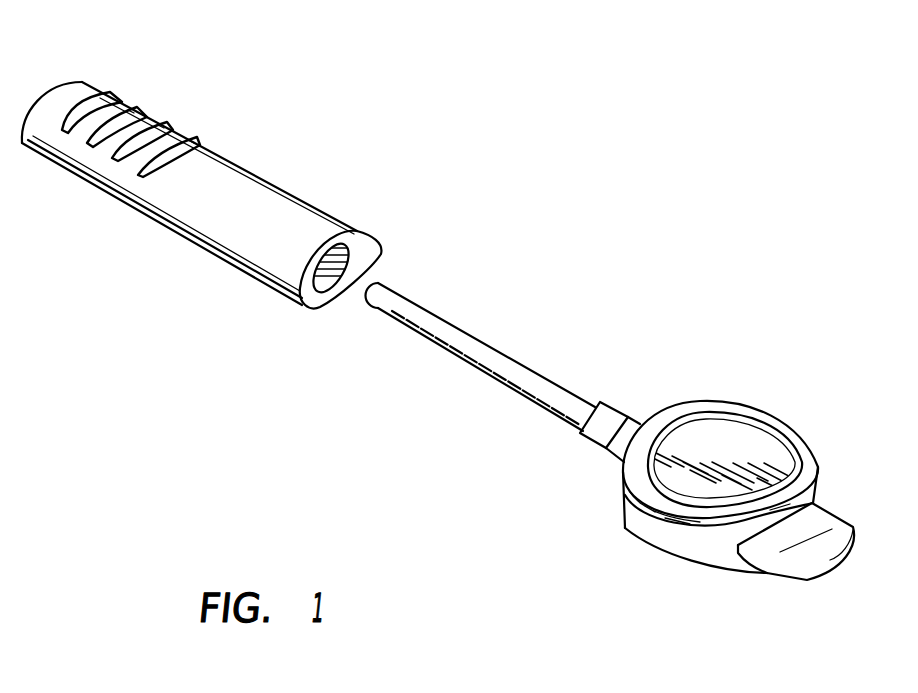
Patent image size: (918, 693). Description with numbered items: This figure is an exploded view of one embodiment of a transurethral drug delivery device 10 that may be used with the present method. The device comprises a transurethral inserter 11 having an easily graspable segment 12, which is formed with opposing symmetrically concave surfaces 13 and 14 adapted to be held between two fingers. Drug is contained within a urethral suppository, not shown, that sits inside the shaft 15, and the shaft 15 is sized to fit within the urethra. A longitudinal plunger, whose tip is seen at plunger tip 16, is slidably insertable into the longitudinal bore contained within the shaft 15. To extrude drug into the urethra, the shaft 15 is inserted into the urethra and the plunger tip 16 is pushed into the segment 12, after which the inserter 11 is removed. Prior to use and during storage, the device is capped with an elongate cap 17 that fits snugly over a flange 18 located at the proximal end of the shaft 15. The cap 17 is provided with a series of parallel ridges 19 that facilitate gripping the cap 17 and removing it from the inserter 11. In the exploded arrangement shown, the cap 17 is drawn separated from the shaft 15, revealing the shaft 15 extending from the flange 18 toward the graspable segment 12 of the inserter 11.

The transurethral drug delivery device 10 is at (391, 109).
The transurethral inserter 11 is at (654, 353).
The easily graspable segment 12 is at (803, 472).
The concave surface 13 is at (727, 438).
The concave surface 14 is at (663, 551).
The shaft 15 is at (462, 338).
The plunger tip 16 is at (743, 567).
The elongate cap 17 is at (208, 225).
The flange 18 is at (602, 437).
The parallel ridges 19 is at (98, 94).